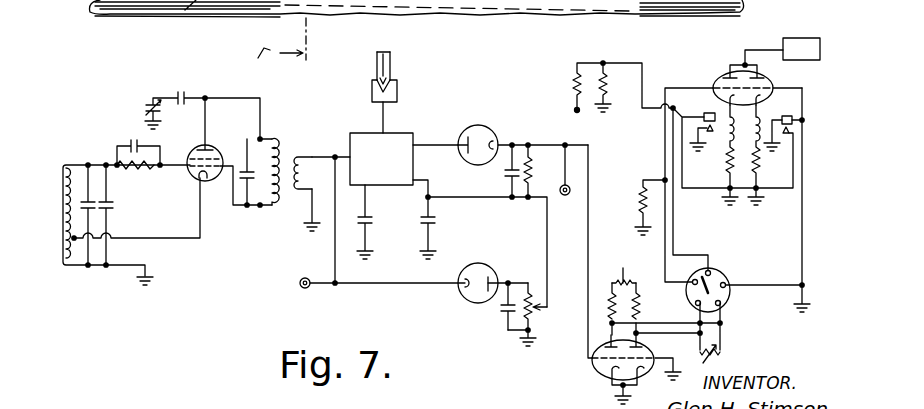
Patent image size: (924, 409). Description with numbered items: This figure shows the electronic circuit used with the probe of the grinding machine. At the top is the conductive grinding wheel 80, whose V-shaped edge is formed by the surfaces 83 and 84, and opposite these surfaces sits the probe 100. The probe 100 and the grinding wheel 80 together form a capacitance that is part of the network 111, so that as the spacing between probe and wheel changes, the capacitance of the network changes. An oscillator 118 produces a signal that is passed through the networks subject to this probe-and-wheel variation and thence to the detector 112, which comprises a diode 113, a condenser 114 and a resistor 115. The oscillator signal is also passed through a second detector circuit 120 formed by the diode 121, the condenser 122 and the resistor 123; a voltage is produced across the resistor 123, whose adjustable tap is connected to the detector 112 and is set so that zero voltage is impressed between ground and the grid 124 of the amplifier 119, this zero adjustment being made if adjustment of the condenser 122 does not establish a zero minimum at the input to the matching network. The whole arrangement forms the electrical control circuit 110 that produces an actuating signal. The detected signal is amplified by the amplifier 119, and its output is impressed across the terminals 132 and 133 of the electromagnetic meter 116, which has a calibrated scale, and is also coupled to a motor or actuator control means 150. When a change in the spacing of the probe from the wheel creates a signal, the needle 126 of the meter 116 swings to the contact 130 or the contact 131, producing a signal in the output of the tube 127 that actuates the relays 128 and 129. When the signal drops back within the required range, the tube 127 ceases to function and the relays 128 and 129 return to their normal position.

The grinding wheel 80 is at (386, 51).
The surface 83 is at (397, 65).
The surface 84 is at (377, 65).
The probe 100 is at (398, 93).
The electrical control circuit 110 is at (302, 319).
The network 111 is at (405, 143).
The detector 112 is at (500, 190).
The diode 113 is at (492, 117).
The condenser 114 is at (515, 186).
The resistor 115 is at (540, 148).
The meter 116 is at (733, 298).
The oscillator 118 is at (168, 212).
The amplifier 119 is at (651, 344).
The detector circuit 120 is at (522, 260).
The diode 121 is at (463, 298).
The condenser 122 is at (506, 311).
The resistor 123 is at (536, 308).
The grid 124 is at (600, 358).
The needle 126 is at (715, 271).
The tube 127 is at (712, 72).
The relay 128 is at (700, 113).
The relay 129 is at (802, 130).
The contact 130 is at (690, 286).
The contact 131 is at (726, 283).
The terminal 132 is at (694, 305).
The terminal 133 is at (724, 306).
The motor or actuator control means 150 is at (805, 38).